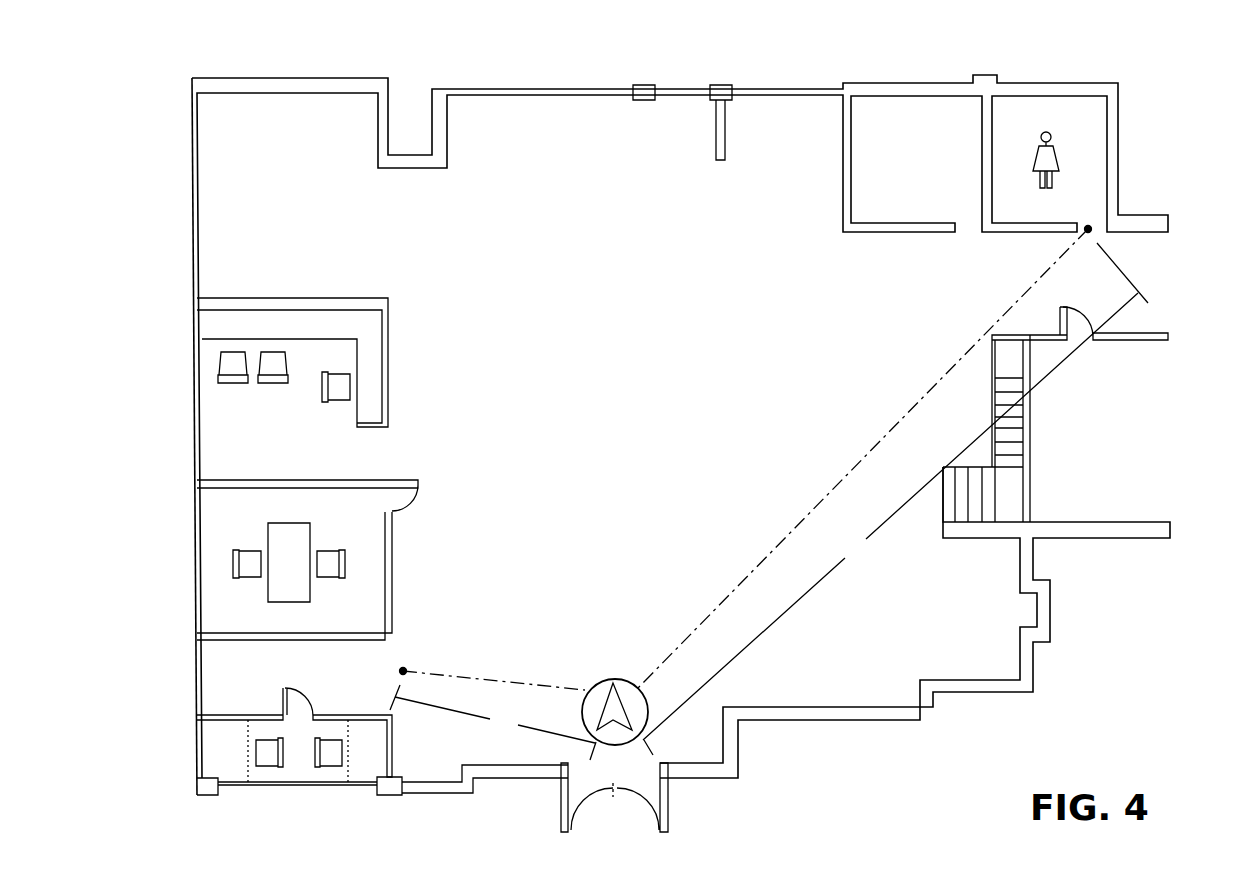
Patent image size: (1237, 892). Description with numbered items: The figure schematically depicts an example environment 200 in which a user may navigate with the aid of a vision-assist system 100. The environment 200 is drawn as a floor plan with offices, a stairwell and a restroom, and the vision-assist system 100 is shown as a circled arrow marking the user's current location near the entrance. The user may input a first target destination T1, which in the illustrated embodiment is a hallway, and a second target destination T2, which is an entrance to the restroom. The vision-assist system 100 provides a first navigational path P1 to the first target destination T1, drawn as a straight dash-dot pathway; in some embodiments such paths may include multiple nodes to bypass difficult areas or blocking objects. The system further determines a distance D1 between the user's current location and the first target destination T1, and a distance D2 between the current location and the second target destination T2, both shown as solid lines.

The environment 200 is at (1168, 121).
The vision-assist system 100 is at (608, 678).
The first target destination T1 is at (403, 671).
The second target destination T2 is at (1088, 229).
The first navigational path P1 is at (497, 680).
The distance to first target destination D1 is at (492, 714).
The distance to second target destination D2 is at (895, 491).